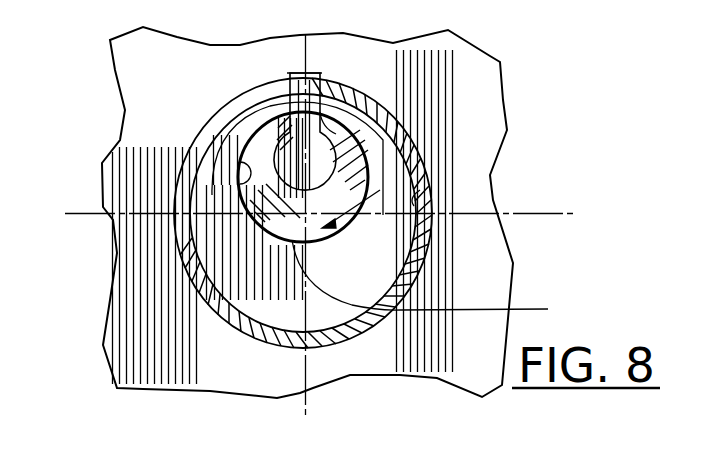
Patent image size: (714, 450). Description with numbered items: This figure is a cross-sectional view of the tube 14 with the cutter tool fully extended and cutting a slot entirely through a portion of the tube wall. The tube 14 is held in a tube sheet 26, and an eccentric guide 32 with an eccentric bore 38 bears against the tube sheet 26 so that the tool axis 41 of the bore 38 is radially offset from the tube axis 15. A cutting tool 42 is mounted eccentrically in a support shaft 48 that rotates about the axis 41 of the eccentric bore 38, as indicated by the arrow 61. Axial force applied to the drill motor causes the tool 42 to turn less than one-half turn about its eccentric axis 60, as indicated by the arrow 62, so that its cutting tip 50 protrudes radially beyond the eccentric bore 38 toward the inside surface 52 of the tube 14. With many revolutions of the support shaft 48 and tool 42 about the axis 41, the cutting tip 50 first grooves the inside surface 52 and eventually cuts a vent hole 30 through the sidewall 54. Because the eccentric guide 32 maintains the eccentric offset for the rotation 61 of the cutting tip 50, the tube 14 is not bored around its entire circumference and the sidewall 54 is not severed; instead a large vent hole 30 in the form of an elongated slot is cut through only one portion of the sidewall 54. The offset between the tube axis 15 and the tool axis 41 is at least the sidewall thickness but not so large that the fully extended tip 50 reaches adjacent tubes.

The tube 14 is at (436, 244).
The tube axis 15 is at (435, 285).
The tube sheet 26 is at (492, 47).
The vent hole 30 is at (345, 80).
The eccentric guide 32 is at (240, 320).
The eccentric bore 38 is at (270, 162).
The axis 41 is at (275, 209).
The cutting tool 42 is at (290, 108).
The support shaft 48 is at (260, 246).
The cutting tip 50 is at (330, 74).
The inside surface 52 is at (420, 190).
The sidewall 54 is at (380, 190).
The eccentric axis 60 is at (336, 149).
The rotation of the tool support 61 is at (435, 266).
The rotation of the tool about the eccentric axis 62 is at (283, 154).